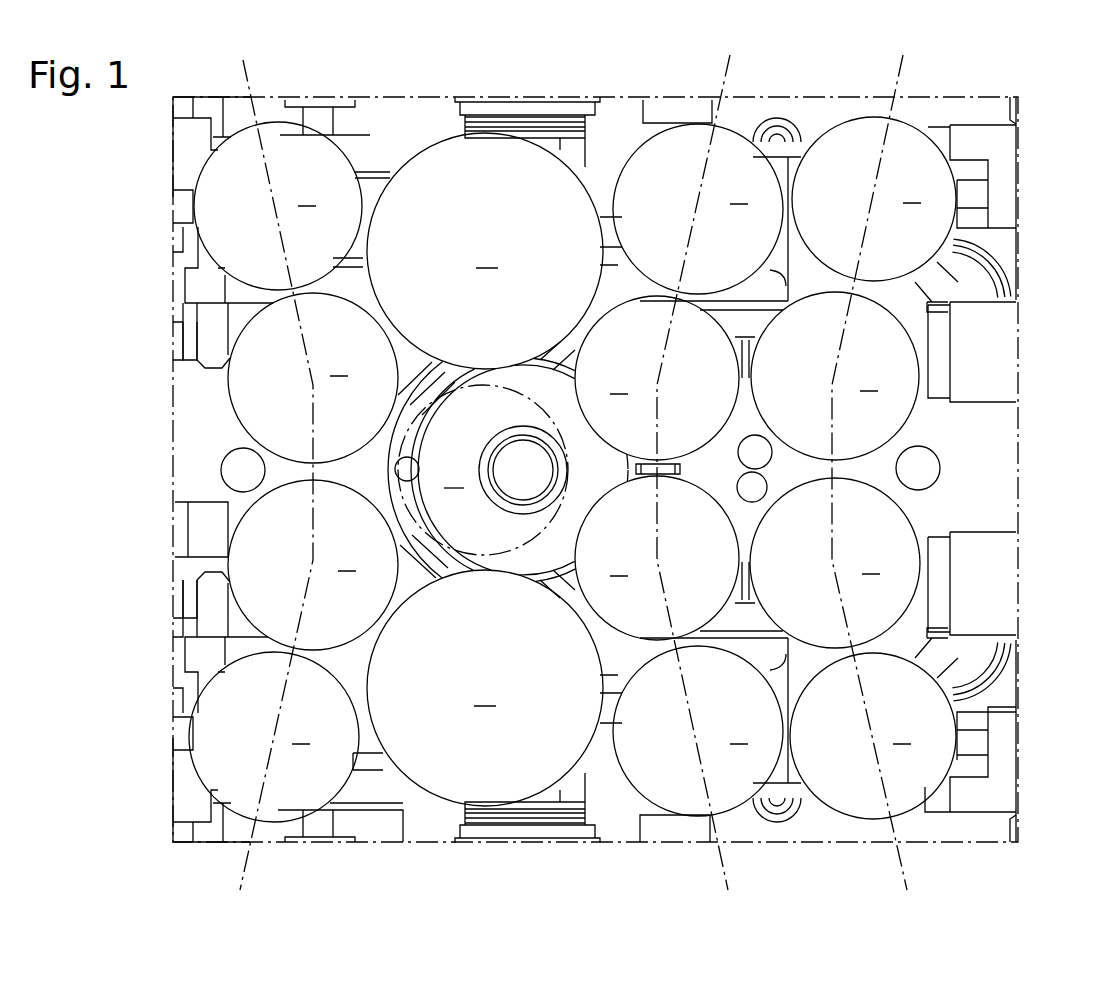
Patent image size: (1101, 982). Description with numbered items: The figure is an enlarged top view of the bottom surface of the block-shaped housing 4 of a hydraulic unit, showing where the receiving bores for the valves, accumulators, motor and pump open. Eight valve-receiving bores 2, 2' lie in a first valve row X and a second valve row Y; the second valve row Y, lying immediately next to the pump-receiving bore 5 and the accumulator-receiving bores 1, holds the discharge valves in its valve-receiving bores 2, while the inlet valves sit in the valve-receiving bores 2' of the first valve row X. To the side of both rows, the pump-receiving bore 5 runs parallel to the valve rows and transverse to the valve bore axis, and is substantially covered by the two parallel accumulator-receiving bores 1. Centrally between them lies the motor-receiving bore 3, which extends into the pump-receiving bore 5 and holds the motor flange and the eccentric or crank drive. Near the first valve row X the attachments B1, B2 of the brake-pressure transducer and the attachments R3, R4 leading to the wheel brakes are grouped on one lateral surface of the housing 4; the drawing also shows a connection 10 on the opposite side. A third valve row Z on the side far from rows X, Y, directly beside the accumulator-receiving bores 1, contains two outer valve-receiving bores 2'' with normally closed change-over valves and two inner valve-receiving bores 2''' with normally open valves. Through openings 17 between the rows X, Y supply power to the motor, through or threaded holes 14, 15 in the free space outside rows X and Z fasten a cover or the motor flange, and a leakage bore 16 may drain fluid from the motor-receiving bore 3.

The accumulator-receiving bores 1 is at (485, 469).
The valve-receiving bores 2 is at (679, 470).
The valve-receiving bores 2' is at (853, 468).
The outer valve-receiving bores 2'' is at (275, 472).
The valve-receiving bores 2''' is at (313, 471).
The motor-receiving bore 3 is at (508, 470).
The housing 4 is at (1018, 688).
The pump-receiving bore 5 is at (527, 475).
The connection 10 is at (157, 474).
The through or threaded holes 14 is at (230, 470).
The through or threaded holes 15 is at (932, 468).
The leakage bore 16 is at (402, 462).
The through openings 17 is at (757, 486).
The attachment of the brake-pressure transducer B1 is at (990, 143).
The attachment of the brake-pressure transducer B2 is at (995, 790).
The attachment leading to the wheel brakes R3 is at (990, 345).
The attachment leading to the wheel brakes R4 is at (990, 598).
The first valve row X is at (869, 476).
The second valve row Y is at (693, 476).
The third valve row Z is at (277, 477).